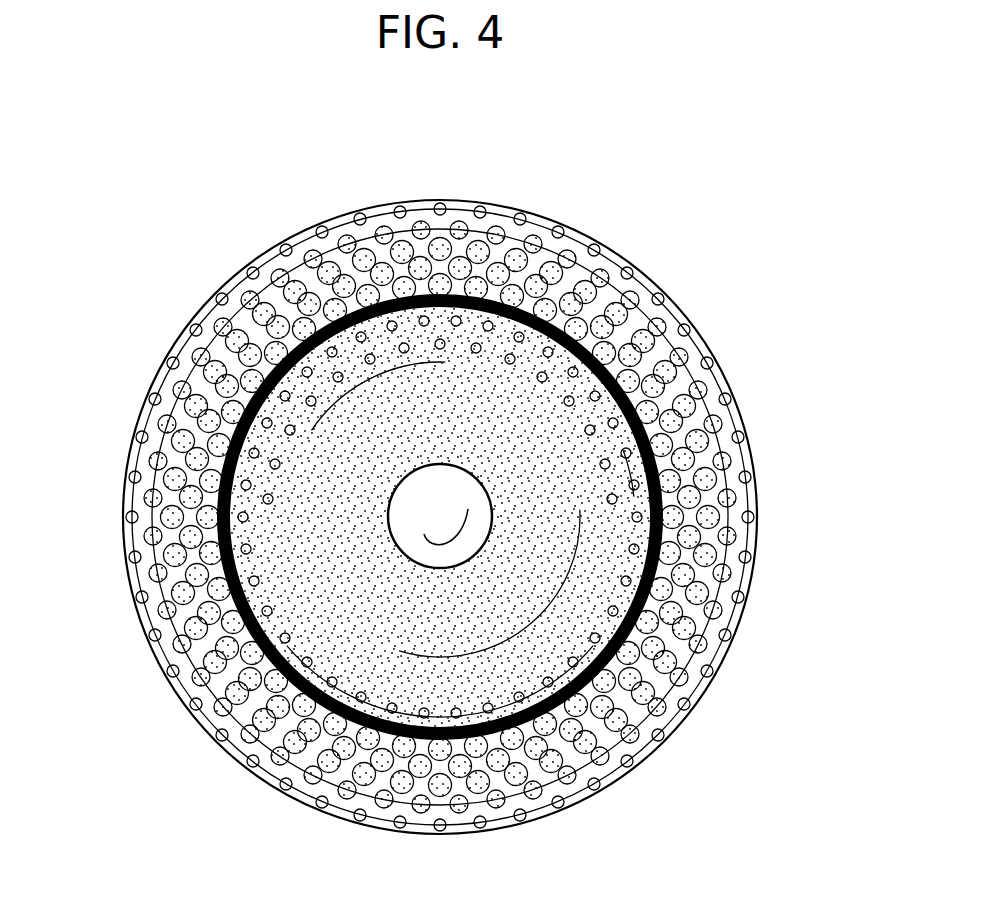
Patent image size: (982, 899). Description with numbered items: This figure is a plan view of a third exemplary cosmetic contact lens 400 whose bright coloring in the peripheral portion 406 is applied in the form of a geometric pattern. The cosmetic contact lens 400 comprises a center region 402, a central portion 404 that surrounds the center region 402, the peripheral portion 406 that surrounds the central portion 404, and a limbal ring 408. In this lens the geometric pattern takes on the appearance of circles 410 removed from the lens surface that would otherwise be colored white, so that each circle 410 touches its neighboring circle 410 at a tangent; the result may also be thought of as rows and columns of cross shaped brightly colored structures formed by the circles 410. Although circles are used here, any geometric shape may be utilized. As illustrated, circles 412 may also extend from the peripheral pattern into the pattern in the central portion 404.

The cosmetic contact lens 400 is at (420, 115).
The center region 402 is at (423, 538).
The central portion 404 is at (285, 433).
The peripheral portion 406 is at (712, 545).
The limbal ring 408 is at (648, 378).
The circles 410 is at (546, 234).
The circles 412 is at (222, 537).